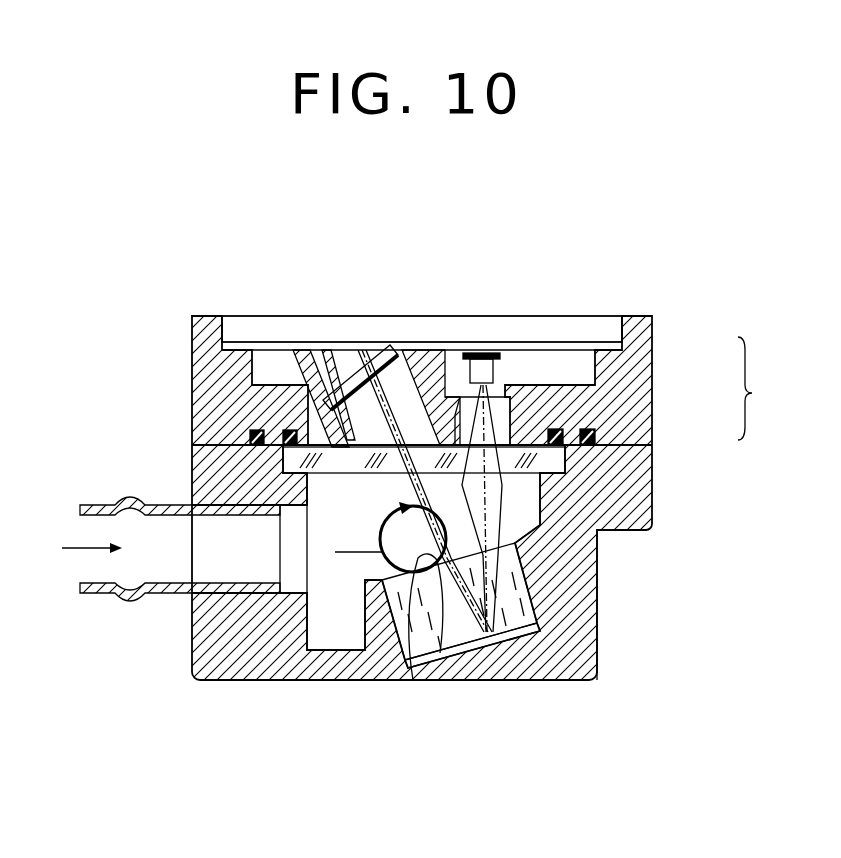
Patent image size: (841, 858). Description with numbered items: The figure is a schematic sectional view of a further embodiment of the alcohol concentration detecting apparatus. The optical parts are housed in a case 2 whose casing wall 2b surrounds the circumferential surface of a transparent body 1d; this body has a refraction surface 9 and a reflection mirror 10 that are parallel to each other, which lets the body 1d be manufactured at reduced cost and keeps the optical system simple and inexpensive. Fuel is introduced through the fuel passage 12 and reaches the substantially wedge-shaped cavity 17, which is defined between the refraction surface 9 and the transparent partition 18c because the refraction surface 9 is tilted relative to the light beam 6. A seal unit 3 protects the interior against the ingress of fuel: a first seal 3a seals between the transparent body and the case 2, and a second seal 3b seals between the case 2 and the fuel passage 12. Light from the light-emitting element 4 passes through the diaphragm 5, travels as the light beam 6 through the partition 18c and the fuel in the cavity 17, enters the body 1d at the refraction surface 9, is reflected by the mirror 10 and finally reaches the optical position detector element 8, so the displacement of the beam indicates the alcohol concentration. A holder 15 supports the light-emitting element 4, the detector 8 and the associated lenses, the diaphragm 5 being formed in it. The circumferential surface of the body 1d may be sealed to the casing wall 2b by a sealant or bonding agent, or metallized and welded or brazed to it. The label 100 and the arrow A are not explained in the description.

The case 2 is at (552, 640).
The cover plate 100 is at (553, 342).
The fluid inlet A is at (148, 346).
The transparent partition 18c is at (283, 462).
The holder 15 is at (305, 360).
The optical position detector element 8 is at (376, 365).
The light-emitting element 4 is at (481, 350).
The diaphragm 5 is at (502, 400).
The first seal 3a is at (568, 426).
The second seal 3b is at (592, 428).
The seal unit 3 is at (753, 388).
The fuel passage 12 is at (382, 557).
The casing wall 2b is at (374, 613).
The transparent body 1d is at (413, 680).
The refraction surface 9 is at (438, 664).
The reflection mirror 10 is at (466, 660).
The light beam 6 is at (540, 480).
The wedge-shaped cavity 17 is at (535, 490).